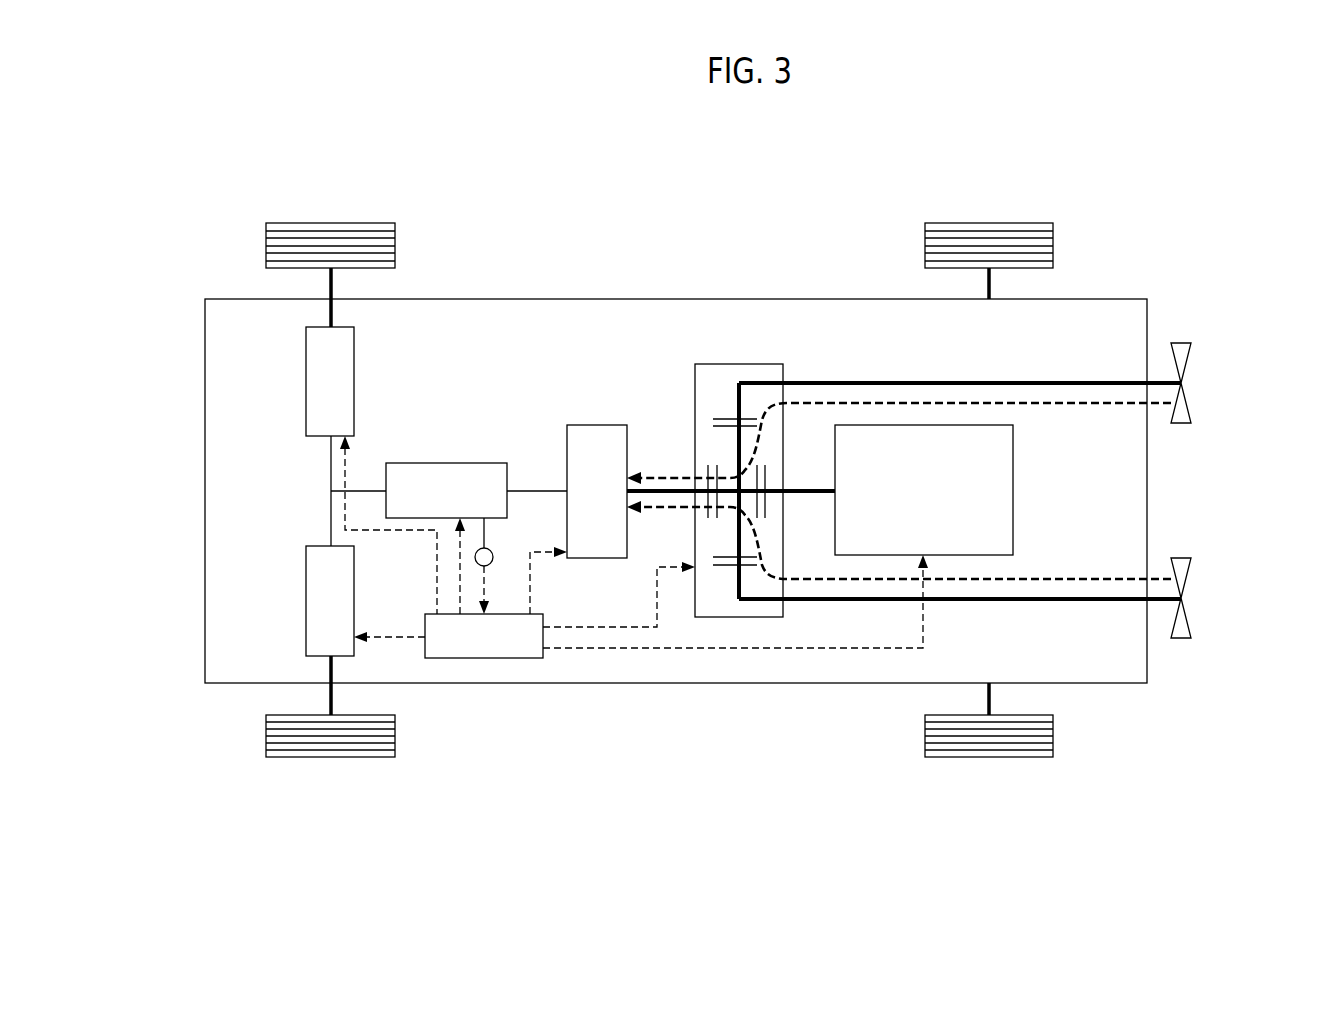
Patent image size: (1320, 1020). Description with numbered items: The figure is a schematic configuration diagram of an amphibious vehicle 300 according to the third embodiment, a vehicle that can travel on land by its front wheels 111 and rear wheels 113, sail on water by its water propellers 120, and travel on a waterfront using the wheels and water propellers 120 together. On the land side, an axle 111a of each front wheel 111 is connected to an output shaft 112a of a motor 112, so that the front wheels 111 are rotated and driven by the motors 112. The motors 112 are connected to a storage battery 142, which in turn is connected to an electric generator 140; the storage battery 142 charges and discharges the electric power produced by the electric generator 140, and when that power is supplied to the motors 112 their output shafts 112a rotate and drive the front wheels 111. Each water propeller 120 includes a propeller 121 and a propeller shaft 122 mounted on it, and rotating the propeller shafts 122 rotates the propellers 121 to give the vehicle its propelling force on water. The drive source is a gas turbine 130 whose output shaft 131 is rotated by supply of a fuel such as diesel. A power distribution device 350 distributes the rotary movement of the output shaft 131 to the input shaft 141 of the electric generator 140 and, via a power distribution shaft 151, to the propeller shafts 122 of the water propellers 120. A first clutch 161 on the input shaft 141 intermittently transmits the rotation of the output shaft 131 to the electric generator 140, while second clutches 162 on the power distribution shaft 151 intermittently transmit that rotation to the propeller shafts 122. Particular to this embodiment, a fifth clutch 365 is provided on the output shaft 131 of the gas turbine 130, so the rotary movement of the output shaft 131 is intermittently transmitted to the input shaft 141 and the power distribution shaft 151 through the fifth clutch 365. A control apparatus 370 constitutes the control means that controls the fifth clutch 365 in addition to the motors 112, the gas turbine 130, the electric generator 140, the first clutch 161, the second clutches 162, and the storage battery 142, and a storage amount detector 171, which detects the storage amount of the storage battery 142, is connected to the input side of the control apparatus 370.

The amphibious vehicle 300 is at (175, 706).
The front wheel 111 is at (328, 223).
The axle 111a is at (330, 286).
The motor 112 is at (306, 377).
The output shaft 112a is at (330, 314).
The rear wheel 113 is at (988, 222).
The water propeller 120 is at (1190, 330).
The propeller 121 is at (1192, 398).
The propeller shaft 122 is at (1062, 382).
The gas turbine 130 is at (1013, 492).
The output shaft 131 is at (807, 497).
The electric generator 140 is at (594, 425).
The input shaft 141 is at (668, 490).
The storage battery 142 is at (438, 462).
The power distribution shaft 151 is at (737, 540).
The first clutch 161 is at (706, 470).
The second clutch 162 is at (720, 418).
The storage amount detector 171 is at (492, 560).
The power distribution device 350 is at (699, 629).
The fifth clutch 365 is at (766, 472).
The control apparatus 370 is at (468, 660).